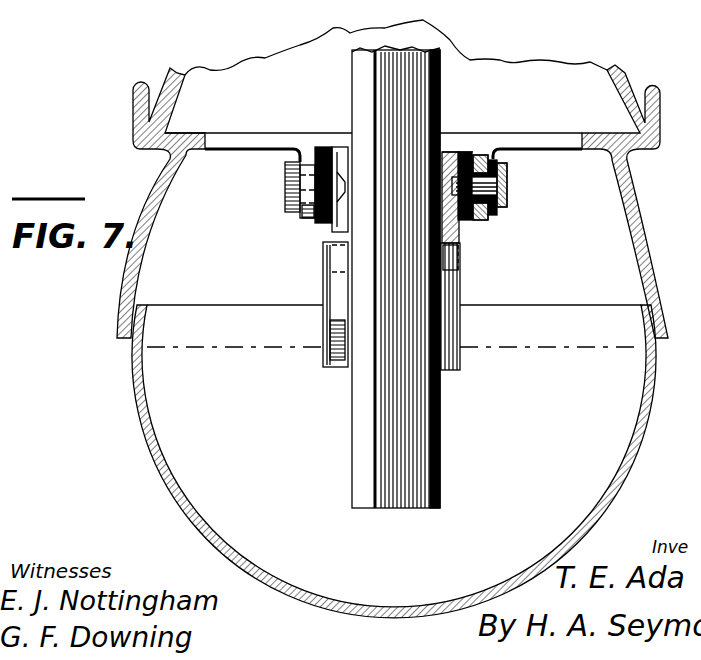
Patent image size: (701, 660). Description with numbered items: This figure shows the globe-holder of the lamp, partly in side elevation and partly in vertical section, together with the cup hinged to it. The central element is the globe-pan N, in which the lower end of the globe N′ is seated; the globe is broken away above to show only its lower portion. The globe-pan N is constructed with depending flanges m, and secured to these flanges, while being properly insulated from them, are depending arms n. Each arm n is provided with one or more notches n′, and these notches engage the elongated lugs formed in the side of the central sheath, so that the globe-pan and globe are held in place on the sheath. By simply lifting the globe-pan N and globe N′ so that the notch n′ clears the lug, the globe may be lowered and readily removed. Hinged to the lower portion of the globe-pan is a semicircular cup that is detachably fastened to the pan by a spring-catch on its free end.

The globe N′ is at (392, 179).
The globe-pan N is at (373, 135).
The depending flanges m is at (300, 218).
The depending arms n is at (333, 231).
The notches n′ is at (462, 248).